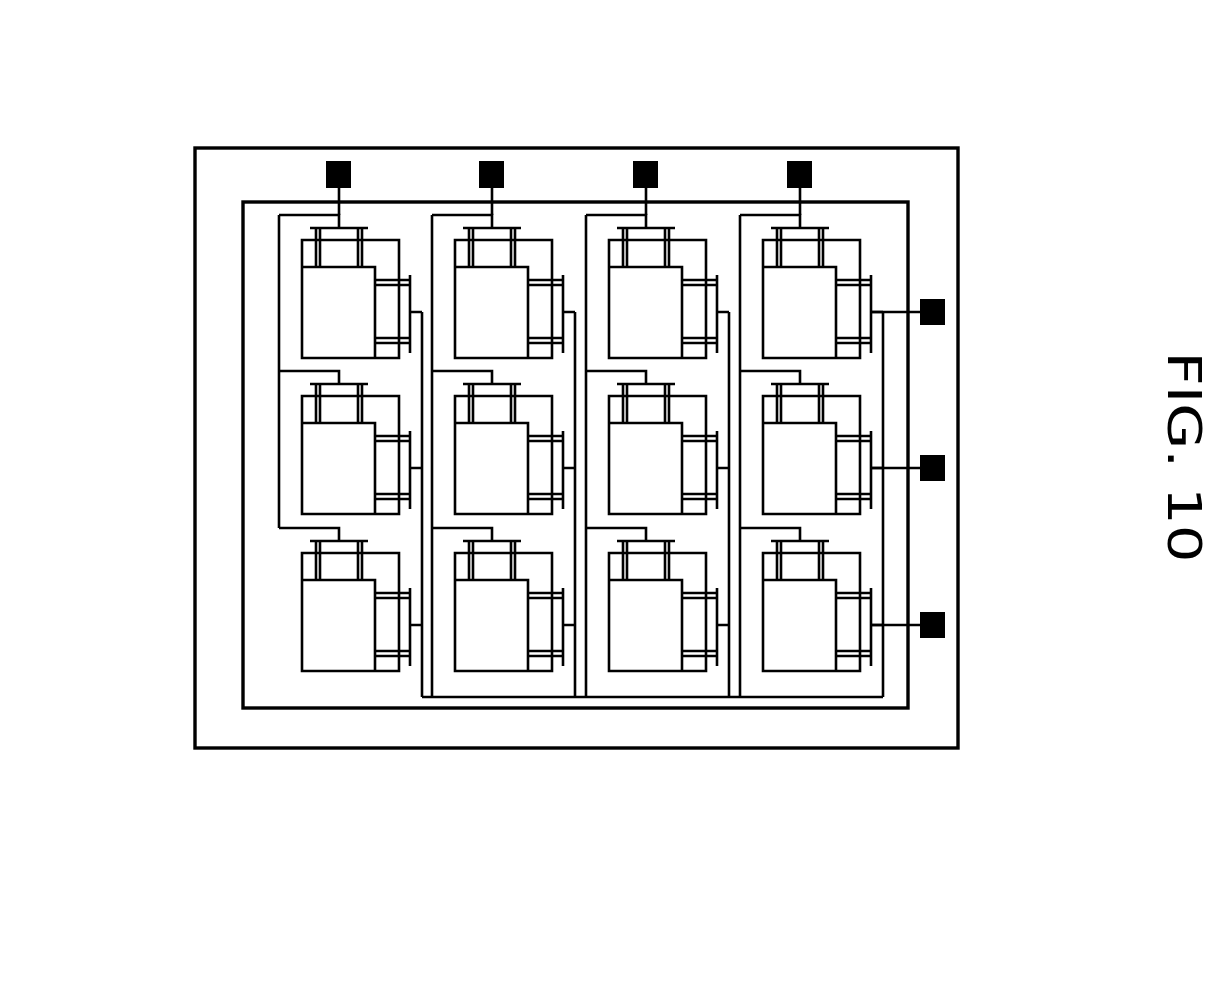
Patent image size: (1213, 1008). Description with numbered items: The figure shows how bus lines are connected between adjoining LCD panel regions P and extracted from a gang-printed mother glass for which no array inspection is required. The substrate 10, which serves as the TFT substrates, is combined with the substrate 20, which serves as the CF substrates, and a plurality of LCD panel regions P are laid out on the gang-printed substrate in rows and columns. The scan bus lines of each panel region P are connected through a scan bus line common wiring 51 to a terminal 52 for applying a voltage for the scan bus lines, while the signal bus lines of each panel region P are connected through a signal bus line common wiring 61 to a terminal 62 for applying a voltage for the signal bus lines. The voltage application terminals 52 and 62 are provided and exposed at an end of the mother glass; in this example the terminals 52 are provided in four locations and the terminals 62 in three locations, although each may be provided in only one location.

The substrate 10 is at (192, 213).
The substrate 20 is at (240, 297).
The scan bus line common wiring 51 is at (431, 243).
The terminal for applying a voltage for the scan bus lines 52 is at (339, 161).
The signal bus line common wiring 61 is at (422, 686).
The terminal for applying a voltage for the signal bus lines 62 is at (946, 311).
The LCD panel region P is at (864, 258).